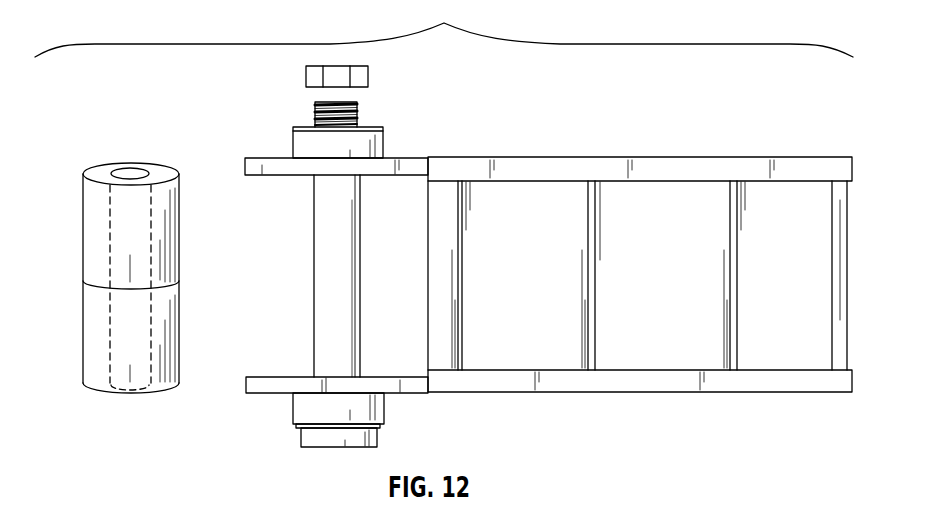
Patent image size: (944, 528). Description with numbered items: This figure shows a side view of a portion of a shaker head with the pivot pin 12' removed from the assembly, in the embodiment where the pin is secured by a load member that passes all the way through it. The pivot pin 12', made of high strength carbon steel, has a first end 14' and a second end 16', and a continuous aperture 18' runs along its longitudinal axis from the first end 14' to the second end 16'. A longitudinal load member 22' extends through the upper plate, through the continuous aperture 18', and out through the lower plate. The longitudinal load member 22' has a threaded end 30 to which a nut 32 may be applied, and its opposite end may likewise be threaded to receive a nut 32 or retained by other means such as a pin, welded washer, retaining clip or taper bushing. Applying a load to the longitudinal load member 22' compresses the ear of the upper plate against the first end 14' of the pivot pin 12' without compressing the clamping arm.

The pivot pin 12' is at (133, 293).
The first end 14' is at (117, 159).
The second end 16' is at (131, 418).
The continuous aperture 18' is at (156, 279).
The longitudinal load member 22' is at (336, 277).
The threaded end 30 is at (358, 113).
The nut 32 is at (370, 76).